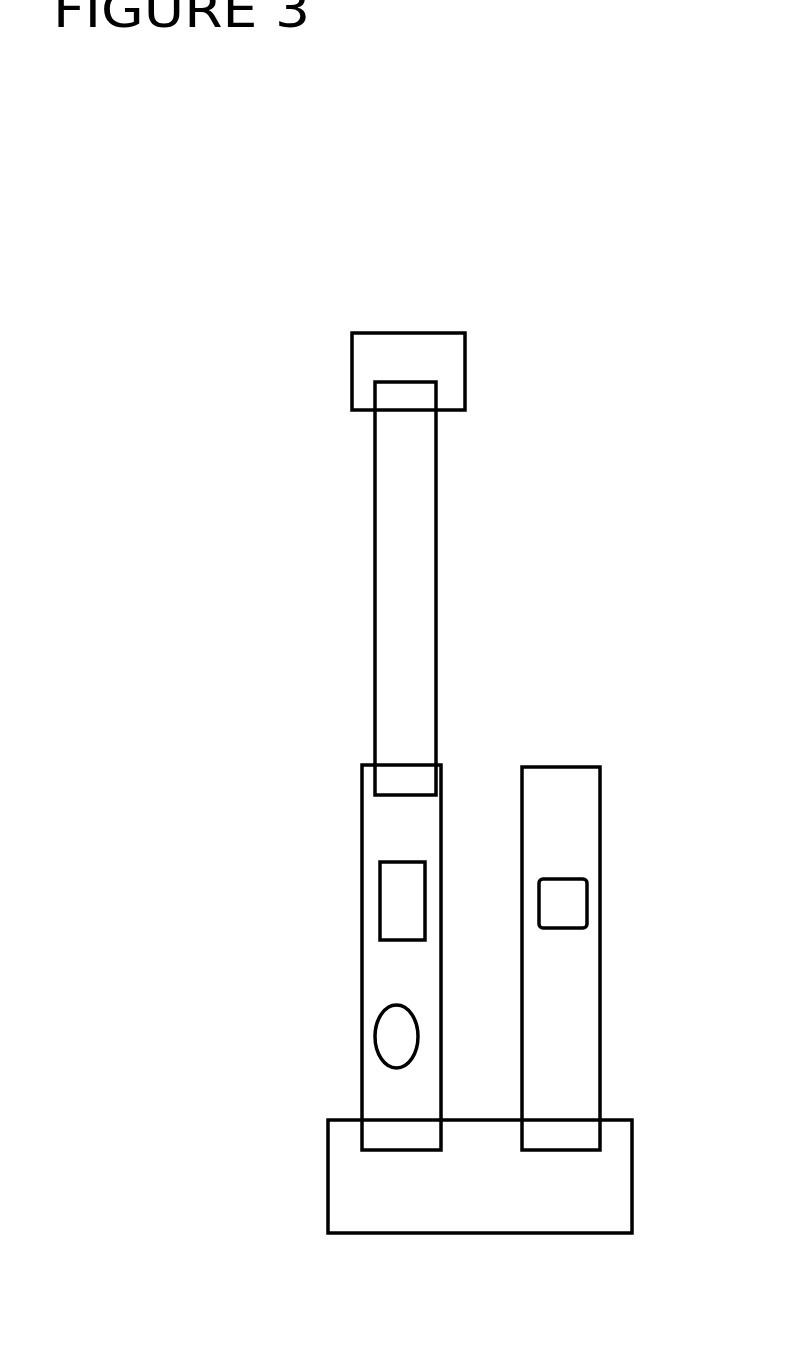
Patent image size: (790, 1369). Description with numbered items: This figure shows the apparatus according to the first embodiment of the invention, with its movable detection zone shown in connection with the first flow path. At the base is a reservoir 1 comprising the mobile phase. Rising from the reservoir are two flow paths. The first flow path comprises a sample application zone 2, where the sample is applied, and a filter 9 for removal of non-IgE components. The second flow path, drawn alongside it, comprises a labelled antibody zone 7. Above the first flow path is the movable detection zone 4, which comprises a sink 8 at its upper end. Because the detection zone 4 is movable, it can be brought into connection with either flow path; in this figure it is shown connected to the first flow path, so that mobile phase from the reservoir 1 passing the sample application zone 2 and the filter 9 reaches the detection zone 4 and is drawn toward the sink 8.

The reservoir 1 is at (587, 1208).
The sample application zone 2 is at (393, 1045).
The movable detection zone 4 is at (415, 612).
The labelled antibody zone 7 is at (573, 912).
The sink 8 is at (442, 370).
The filter 9 is at (400, 918).